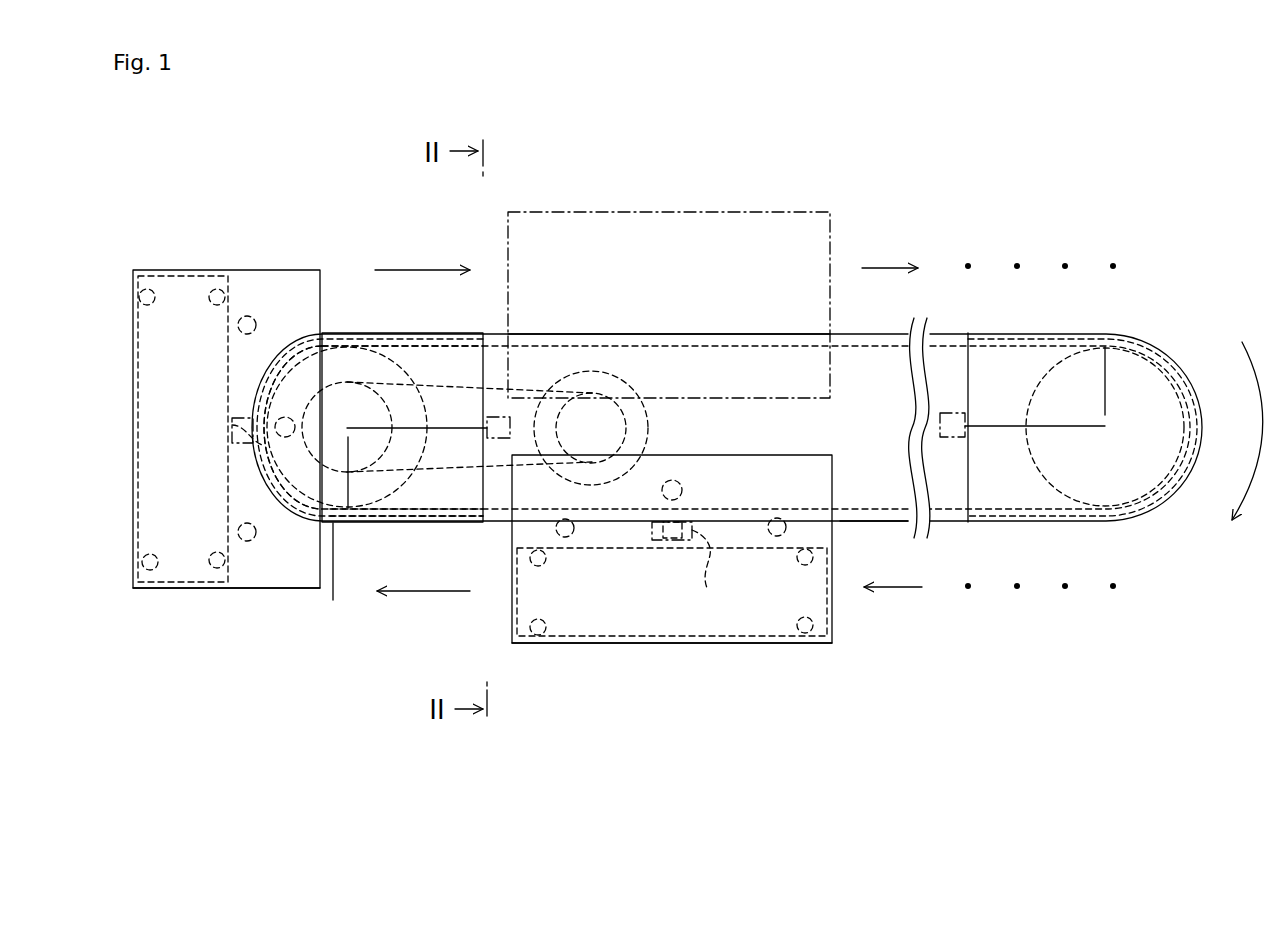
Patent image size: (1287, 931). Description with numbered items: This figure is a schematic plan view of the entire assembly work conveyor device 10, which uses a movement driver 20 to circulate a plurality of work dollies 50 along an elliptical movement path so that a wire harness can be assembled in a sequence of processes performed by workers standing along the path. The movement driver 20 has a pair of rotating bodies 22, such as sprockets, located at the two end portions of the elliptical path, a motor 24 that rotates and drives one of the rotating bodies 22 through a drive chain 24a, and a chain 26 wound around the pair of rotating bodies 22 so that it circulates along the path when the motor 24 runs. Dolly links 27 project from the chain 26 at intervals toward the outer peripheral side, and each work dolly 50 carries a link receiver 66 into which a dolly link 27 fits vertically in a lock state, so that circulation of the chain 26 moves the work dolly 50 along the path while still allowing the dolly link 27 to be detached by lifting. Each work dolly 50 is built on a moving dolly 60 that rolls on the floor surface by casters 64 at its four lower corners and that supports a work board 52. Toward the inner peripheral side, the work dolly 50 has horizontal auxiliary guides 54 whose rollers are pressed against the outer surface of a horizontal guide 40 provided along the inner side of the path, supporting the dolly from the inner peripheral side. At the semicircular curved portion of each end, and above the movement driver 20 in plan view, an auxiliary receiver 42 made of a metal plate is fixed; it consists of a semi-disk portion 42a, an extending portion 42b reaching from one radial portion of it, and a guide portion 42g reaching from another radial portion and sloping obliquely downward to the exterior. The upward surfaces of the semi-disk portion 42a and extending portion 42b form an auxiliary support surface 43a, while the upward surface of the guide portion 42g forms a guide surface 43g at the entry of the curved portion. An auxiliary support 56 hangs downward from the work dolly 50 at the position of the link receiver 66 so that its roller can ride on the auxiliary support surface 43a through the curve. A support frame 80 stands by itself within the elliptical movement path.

The assembly work conveyor device 10 is at (840, 178).
The movement driver 20 is at (458, 340).
The rotating bodies 22 is at (403, 365).
The motor 24 is at (626, 383).
The drive chain 24a is at (438, 470).
The chain 26 is at (667, 334).
The dolly link 27 is at (232, 432).
The horizontal guide 40 is at (865, 522).
The auxiliary receiver 42 is at (352, 334).
The semi-disk portion 42a is at (303, 347).
The extending portion 42b is at (405, 346).
The guide portion 42g is at (362, 523).
The auxiliary support surface 43a is at (329, 576).
The guide surface 43g is at (418, 523).
The work dolly 50 is at (147, 592).
The work board 52 is at (252, 590).
The horizontal auxiliary guide 54 is at (247, 316).
The auxiliary support 56 is at (278, 437).
The moving dolly 60 is at (192, 590).
The casters 64 is at (147, 289).
The link receiver 66 is at (240, 416).
The support frame 80 is at (500, 440).